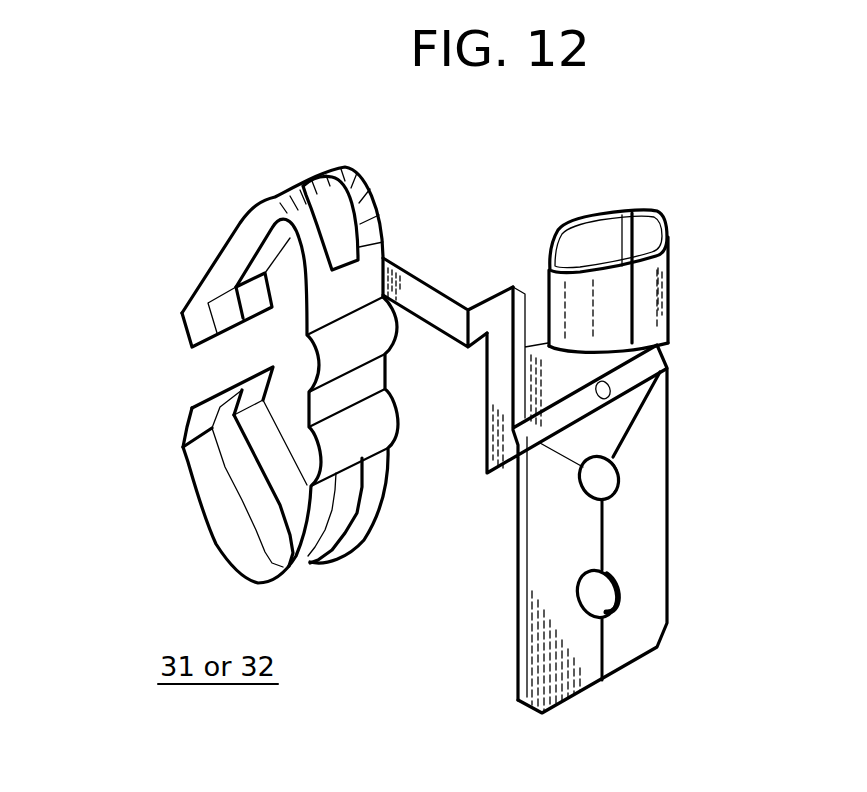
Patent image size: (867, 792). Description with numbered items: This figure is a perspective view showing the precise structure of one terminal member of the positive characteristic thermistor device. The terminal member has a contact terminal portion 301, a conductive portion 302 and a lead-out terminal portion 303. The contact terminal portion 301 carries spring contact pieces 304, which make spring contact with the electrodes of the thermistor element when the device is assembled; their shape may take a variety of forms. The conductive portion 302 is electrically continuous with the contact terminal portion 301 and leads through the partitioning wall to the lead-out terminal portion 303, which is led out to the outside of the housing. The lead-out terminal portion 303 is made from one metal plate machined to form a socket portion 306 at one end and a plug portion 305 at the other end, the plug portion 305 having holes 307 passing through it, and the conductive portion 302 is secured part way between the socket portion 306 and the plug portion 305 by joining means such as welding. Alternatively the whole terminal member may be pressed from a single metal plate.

The contact terminal portion 301 is at (295, 372).
The conductive portion 302 is at (450, 302).
The lead-out terminal portion 303 is at (517, 590).
The spring contact piece 304 is at (190, 301).
The plug portion 305 is at (655, 606).
The socket portion 306 is at (668, 256).
The holes 307 is at (623, 473).